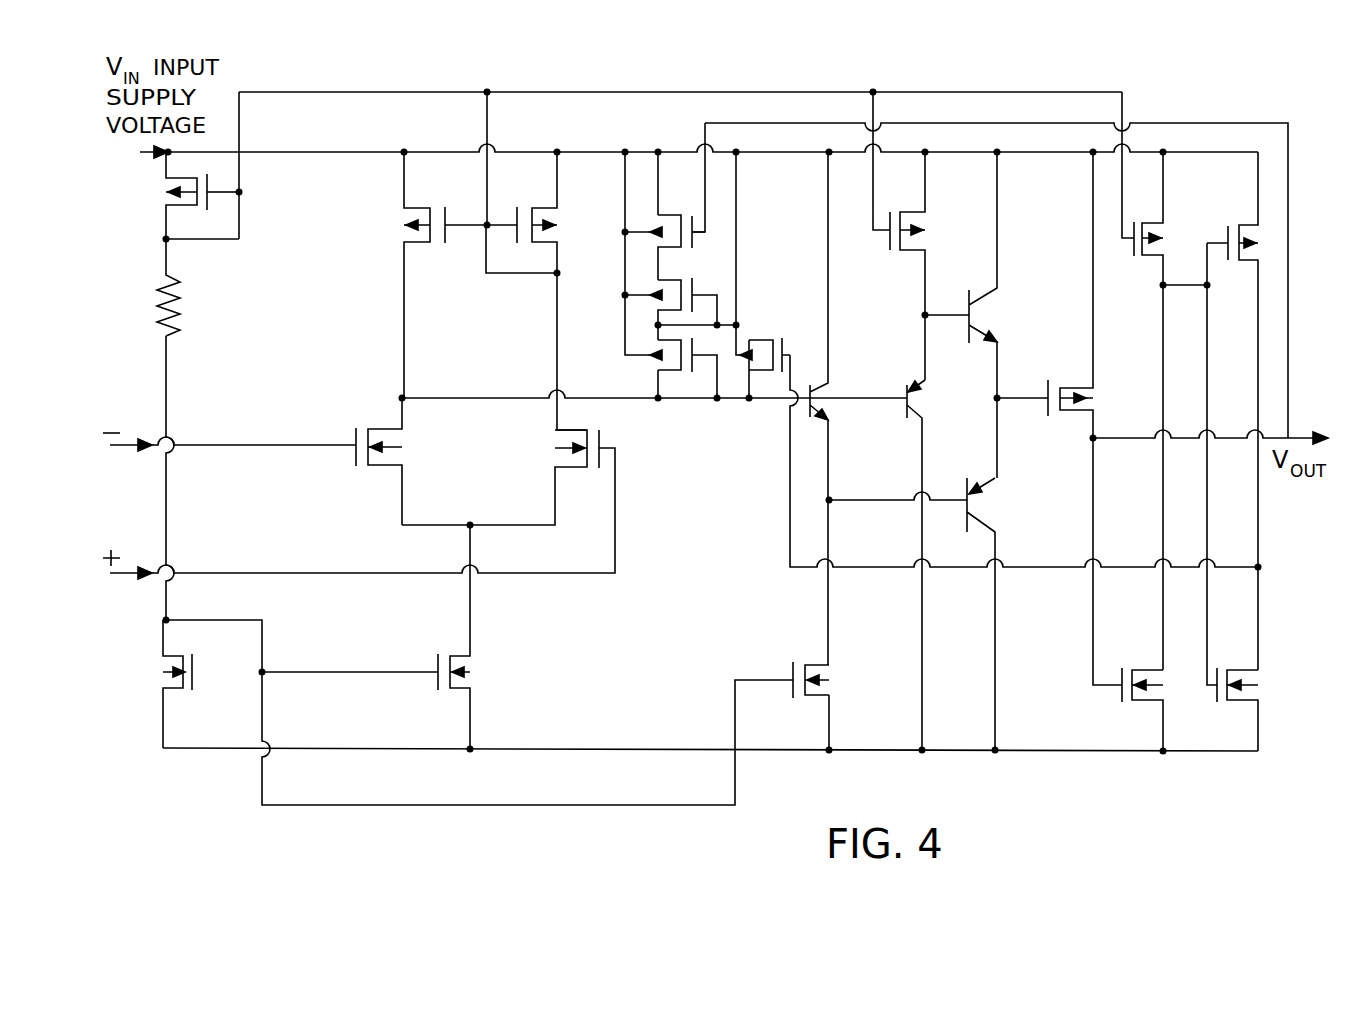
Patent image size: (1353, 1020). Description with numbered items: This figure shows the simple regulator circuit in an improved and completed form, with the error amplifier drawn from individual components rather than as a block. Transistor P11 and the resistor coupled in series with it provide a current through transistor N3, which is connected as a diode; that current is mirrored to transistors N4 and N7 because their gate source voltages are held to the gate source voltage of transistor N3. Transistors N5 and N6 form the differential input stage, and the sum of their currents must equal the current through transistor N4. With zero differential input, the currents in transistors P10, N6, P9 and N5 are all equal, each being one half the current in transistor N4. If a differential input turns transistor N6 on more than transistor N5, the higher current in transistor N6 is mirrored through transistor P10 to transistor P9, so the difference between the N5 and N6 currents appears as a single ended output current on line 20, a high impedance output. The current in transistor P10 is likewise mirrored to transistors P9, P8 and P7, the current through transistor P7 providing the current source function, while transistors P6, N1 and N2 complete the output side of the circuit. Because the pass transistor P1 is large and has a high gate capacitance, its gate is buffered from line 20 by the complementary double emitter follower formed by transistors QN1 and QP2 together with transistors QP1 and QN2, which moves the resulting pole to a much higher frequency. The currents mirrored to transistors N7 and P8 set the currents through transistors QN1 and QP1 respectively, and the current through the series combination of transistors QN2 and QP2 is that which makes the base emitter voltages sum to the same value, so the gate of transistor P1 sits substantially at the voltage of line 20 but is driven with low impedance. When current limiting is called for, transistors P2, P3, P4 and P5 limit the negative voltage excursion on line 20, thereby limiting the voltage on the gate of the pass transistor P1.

The line 20 is at (437, 397).
The transistor P11 is at (196, 244).
The transistor P9 is at (460, 275).
The transistor P10 is at (536, 291).
The transistor N5 is at (379, 461).
The transistor N6 is at (503, 477).
The transistor P2 is at (677, 234).
The transistor P3 is at (683, 289).
The transistor P4 is at (683, 368).
The transistor P5 is at (768, 354).
The transistor QN1 is at (782, 408).
The transistor P8 is at (899, 236).
The transistor QN2 is at (985, 315).
The transistor QP1 is at (940, 565).
The transistor QP2 is at (936, 614).
The pass transistor P1 is at (1059, 418).
The transistor P7 is at (1138, 381).
The transistor P6 is at (1239, 411).
The transistor N1 is at (1141, 709).
The transistor N2 is at (1232, 709).
The transistor N3 is at (185, 684).
The transistor N4 is at (446, 637).
The transistor N7 is at (803, 697).